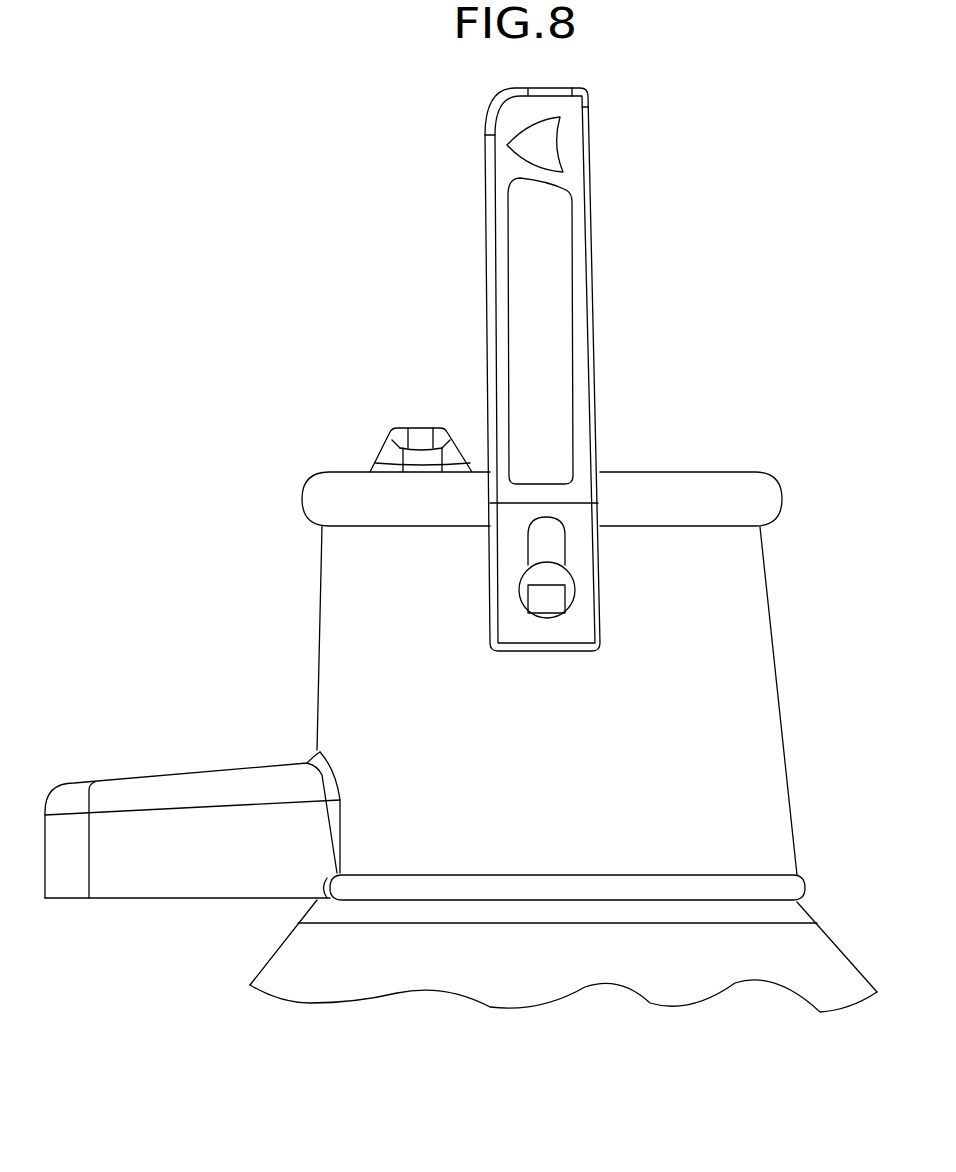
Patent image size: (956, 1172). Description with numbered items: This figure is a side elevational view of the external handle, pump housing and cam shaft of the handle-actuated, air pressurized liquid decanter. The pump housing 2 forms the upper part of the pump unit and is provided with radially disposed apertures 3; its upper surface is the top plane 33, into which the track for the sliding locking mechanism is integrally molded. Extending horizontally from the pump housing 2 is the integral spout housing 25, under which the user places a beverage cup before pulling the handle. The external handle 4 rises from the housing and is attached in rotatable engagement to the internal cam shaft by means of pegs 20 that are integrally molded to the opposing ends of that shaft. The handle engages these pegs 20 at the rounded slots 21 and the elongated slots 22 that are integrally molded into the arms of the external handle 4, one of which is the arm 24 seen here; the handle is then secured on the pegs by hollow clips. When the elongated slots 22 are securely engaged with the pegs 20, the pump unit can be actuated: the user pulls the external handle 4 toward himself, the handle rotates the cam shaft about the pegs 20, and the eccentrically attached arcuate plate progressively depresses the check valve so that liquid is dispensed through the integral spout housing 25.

The pump housing 2 is at (777, 662).
The radially disposed apertures 3 is at (558, 577).
The external handle 4 is at (590, 332).
The pegs 20 is at (537, 598).
The rounded slots 21 is at (530, 578).
The elongated slots 22 is at (533, 535).
The arm 24 is at (590, 258).
The integral spout housing 25 is at (163, 775).
The top plane 33 is at (700, 472).